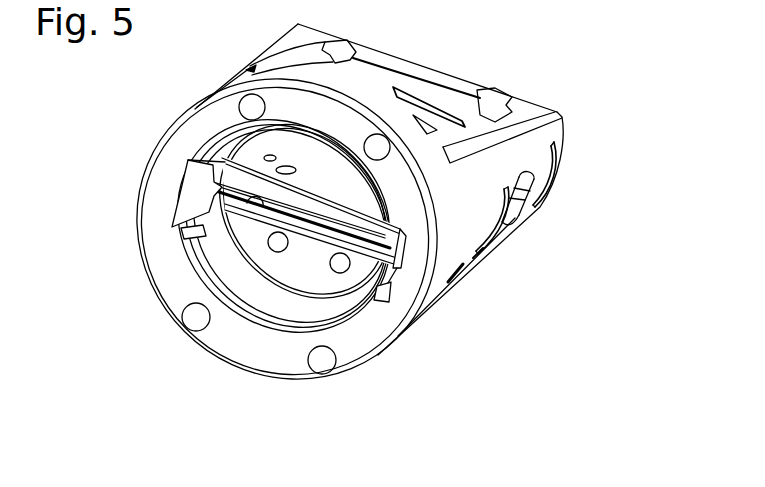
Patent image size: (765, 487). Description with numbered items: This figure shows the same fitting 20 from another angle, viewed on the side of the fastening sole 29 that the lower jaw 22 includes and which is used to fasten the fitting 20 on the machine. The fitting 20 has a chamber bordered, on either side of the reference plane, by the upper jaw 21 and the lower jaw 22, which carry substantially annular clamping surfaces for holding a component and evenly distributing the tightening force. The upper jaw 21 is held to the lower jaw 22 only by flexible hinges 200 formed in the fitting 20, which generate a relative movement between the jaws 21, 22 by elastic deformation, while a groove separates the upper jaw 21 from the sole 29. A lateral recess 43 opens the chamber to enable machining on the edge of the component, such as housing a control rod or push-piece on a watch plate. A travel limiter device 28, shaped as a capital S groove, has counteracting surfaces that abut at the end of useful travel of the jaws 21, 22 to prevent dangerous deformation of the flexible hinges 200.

The fitting 20 is at (592, 147).
The upper jaw 21 is at (500, 240).
The lower jaw 22 is at (537, 160).
The travel limiter device 28 is at (461, 305).
The sole 29 is at (233, 345).
The lateral recess 43 is at (528, 226).
The flexible hinges 200 is at (572, 170).